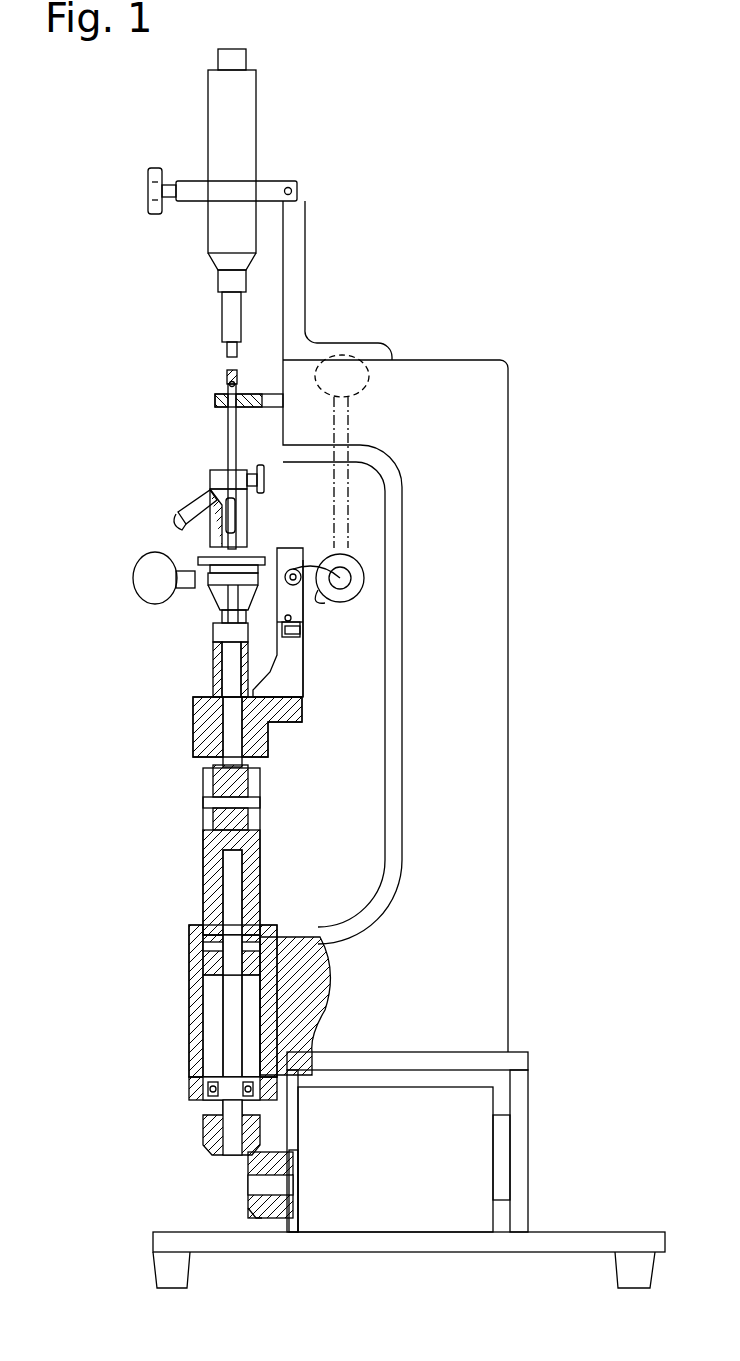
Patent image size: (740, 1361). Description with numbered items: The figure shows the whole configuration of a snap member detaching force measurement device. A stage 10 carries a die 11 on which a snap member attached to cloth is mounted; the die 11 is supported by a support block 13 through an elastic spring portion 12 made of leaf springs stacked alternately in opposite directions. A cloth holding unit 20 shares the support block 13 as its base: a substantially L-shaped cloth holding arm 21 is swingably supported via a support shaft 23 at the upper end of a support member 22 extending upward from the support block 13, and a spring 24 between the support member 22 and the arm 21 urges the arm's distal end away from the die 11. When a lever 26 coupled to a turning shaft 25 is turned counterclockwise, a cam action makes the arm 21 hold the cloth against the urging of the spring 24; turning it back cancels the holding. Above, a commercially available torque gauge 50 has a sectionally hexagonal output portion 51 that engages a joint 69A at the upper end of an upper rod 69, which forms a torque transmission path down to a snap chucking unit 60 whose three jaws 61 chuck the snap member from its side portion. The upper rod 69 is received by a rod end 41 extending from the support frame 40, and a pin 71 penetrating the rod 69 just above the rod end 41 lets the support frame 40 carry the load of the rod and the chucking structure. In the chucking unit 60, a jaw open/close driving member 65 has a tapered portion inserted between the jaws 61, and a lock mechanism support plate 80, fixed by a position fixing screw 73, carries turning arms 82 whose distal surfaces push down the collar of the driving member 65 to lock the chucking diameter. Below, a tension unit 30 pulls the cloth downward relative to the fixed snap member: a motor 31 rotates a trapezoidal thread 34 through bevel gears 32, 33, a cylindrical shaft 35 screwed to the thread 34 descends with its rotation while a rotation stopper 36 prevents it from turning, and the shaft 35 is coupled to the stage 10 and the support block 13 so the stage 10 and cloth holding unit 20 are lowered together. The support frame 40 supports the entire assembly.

The stage 10 is at (202, 695).
The die 11 is at (213, 633).
The elastic spring portion 12 is at (213, 652).
The support block 13 is at (193, 700).
The cloth holding unit 20 is at (357, 556).
The cloth holding arm 21 is at (284, 640).
The support member 22 is at (304, 670).
The support shaft 23 is at (300, 626).
The spring 24 is at (300, 637).
The turning shaft 25 is at (330, 560).
The lever 26 is at (134, 566).
The tension unit 30 is at (316, 998).
The motor 31 is at (407, 1142).
The bevel gear 32 is at (250, 1207).
The bevel gear 33 is at (204, 1157).
The trapezoidal thread 34 is at (222, 1026).
The cylindrical shaft 35 is at (255, 870).
The rotation stopper 36 is at (258, 930).
The support frame 40 is at (510, 907).
The rod end 41 is at (215, 405).
The torque gauge 50 is at (258, 99).
The output portion 51 is at (226, 346).
The snap chucking unit 60 is at (213, 506).
The jaw 61 is at (213, 607).
The jaw open/close driving member 65 is at (248, 556).
The upper rod 69 is at (228, 441).
The joint 69A is at (225, 373).
The pin 71 is at (233, 381).
The position fixing screw 73 is at (265, 482).
The lock mechanism support plate 80 is at (210, 473).
The turning arm 82 is at (182, 529).